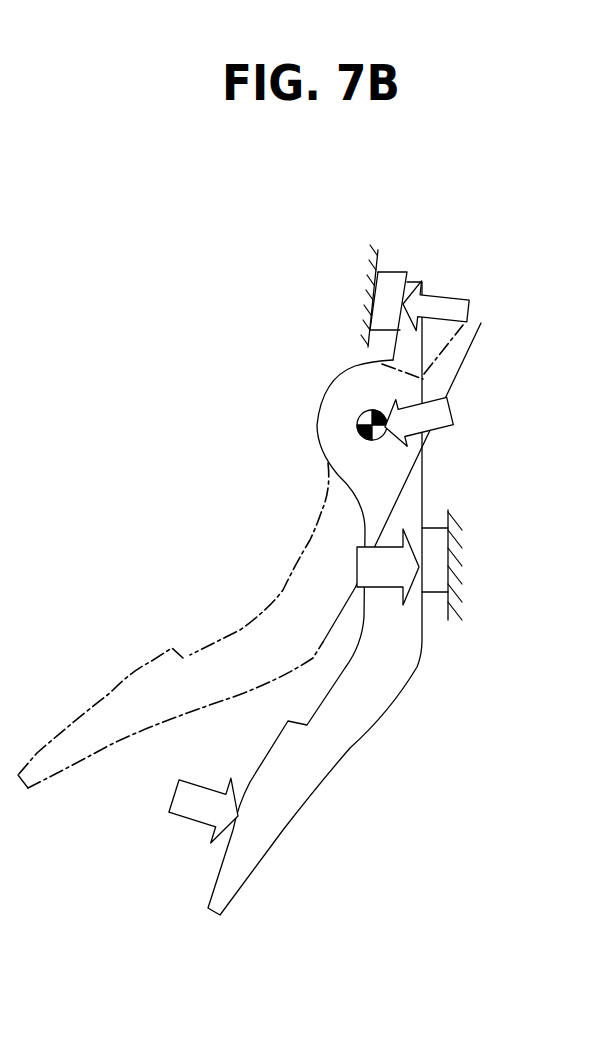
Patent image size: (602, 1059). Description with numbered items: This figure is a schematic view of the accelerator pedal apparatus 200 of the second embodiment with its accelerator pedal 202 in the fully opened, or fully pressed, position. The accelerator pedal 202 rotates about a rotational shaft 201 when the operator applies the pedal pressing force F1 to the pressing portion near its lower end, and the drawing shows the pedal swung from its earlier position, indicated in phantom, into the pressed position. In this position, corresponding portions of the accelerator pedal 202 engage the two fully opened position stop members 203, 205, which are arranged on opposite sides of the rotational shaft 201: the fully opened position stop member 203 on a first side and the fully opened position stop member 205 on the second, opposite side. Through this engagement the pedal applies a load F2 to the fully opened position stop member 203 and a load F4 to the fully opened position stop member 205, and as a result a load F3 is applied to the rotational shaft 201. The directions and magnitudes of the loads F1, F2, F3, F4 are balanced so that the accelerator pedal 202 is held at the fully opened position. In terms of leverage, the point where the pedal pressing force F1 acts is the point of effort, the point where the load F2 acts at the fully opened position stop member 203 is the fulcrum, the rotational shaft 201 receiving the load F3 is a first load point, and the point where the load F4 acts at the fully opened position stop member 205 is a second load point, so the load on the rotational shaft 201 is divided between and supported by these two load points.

The accelerator pedal apparatus 200 is at (481, 188).
The rotational shaft 201 is at (363, 421).
The accelerator pedal 202 is at (347, 725).
The fully opened position stop member 203 is at (440, 562).
The fully opened position stop member 205 is at (392, 280).
The pedal pressing force F1 is at (193, 803).
The load F2 is at (373, 572).
The load F3 is at (433, 410).
The load F4 is at (452, 308).